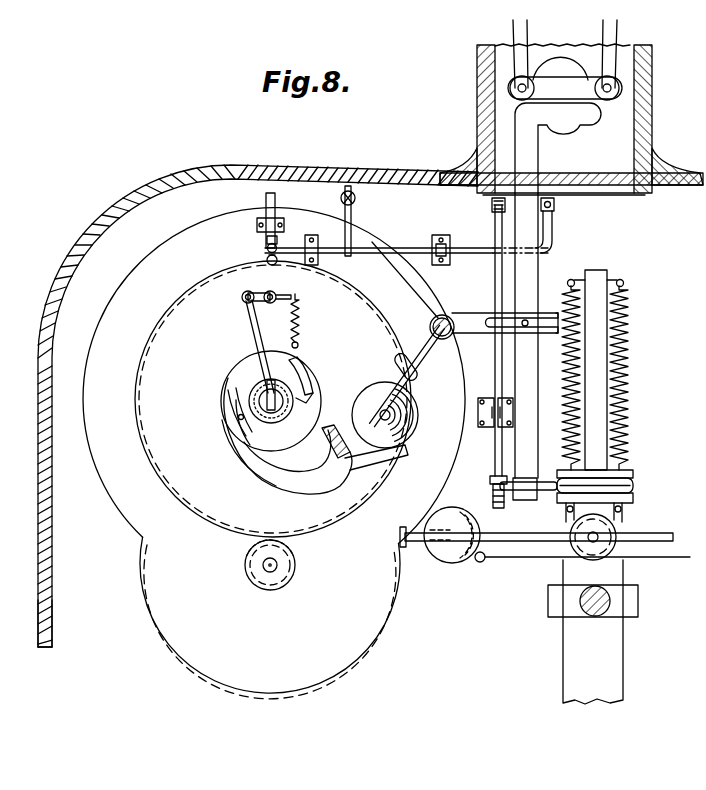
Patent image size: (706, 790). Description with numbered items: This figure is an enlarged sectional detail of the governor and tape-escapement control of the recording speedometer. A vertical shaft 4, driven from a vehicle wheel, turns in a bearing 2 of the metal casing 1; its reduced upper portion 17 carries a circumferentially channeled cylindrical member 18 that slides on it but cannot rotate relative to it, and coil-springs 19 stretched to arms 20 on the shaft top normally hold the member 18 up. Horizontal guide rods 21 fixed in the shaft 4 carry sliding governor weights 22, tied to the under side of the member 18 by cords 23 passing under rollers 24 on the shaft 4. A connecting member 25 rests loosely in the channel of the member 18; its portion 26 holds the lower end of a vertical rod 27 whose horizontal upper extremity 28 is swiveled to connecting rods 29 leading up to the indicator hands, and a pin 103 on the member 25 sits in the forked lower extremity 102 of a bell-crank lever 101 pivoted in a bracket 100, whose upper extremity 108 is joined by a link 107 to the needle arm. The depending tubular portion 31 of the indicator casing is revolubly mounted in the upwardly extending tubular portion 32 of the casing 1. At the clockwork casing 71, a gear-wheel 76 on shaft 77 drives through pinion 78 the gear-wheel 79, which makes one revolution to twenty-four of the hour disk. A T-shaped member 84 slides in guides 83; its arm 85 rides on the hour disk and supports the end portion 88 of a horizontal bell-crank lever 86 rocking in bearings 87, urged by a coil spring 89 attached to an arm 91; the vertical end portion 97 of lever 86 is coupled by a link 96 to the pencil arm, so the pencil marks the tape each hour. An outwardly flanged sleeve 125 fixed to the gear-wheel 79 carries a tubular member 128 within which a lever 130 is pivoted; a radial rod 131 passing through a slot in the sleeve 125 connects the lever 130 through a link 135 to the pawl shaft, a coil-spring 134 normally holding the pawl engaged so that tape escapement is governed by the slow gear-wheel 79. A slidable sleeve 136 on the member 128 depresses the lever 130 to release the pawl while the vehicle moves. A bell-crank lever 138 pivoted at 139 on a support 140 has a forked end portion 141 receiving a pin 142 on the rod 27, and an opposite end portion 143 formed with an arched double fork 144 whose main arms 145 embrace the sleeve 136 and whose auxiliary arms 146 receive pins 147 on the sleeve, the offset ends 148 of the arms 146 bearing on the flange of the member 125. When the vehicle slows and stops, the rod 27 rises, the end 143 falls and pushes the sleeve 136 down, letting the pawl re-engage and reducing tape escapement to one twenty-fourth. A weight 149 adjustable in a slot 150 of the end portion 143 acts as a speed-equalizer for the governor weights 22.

The casing 1 is at (40, 585).
The bearing 2 is at (557, 602).
The shaft 4 is at (578, 686).
The shaft portion 17 is at (615, 395).
The cylindrical member 18 is at (634, 498).
The coil-springs 19 is at (580, 360).
The arms 20 is at (620, 278).
The guide rods 21 is at (521, 542).
The weights 22 is at (445, 556).
The cords 23 is at (490, 562).
The rollers 24 is at (598, 555).
The connecting member 25 is at (628, 474).
The portion 26 is at (530, 490).
The rod 27 is at (530, 385).
The upper extremity 28 is at (575, 120).
The connecting rods 29 is at (525, 37).
The tubular portion 31 is at (625, 100).
The tubular portion 32 is at (571, 152).
The casing 71 is at (117, 297).
The gear-wheel 76 is at (330, 665).
The shaft 77 is at (278, 566).
The pinion 78 is at (278, 582).
The gear-wheel 79 is at (217, 512).
The guides 83 is at (262, 222).
The T-shaped member 84 is at (276, 214).
The arm 85 is at (265, 262).
The bell-crank lever 86 is at (400, 248).
The bearings 87 is at (319, 256).
The end portion 88 is at (276, 245).
The coil spring 89 is at (356, 198).
The arm 91 is at (351, 234).
The link 96 is at (556, 204).
The end portion 97 is at (554, 230).
The bracket 100 is at (488, 421).
The bell-crank lever 101 is at (498, 362).
The lower extremity 102 is at (493, 490).
The pin 103 is at (490, 480).
The link 107 is at (490, 204).
The upper extremity 108 is at (495, 248).
The collar or sleeve 125 is at (238, 437).
The tubular member 128 is at (279, 410).
The lever 130 is at (306, 404).
The rod 131 is at (254, 340).
The coil-spring 134 is at (316, 326).
The link 135 is at (246, 292).
The sleeve 136 is at (240, 388).
The bell-crank lever 138 is at (418, 356).
The pivot 139 is at (450, 320).
The support 140 is at (434, 326).
The end portion 141 is at (528, 312).
The pin 142 is at (500, 328).
The end portion 143 is at (362, 470).
The arched double fork 144 is at (290, 484).
The main arms 145 is at (285, 464).
The auxiliary fork arms 146 is at (262, 452).
The pins 147 is at (302, 378).
The offset end portions 148 is at (240, 420).
The weight 149 is at (400, 425).
The slot 150 is at (393, 370).